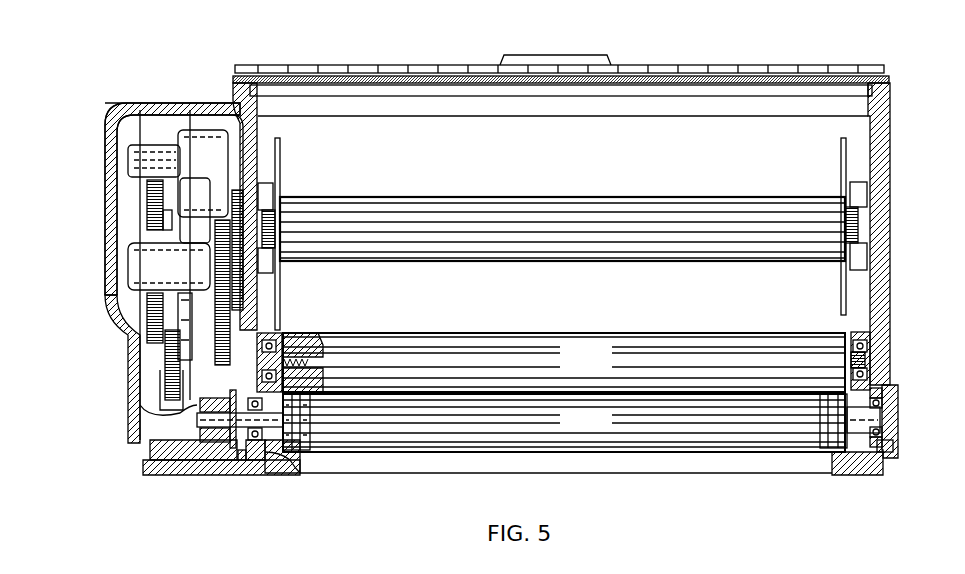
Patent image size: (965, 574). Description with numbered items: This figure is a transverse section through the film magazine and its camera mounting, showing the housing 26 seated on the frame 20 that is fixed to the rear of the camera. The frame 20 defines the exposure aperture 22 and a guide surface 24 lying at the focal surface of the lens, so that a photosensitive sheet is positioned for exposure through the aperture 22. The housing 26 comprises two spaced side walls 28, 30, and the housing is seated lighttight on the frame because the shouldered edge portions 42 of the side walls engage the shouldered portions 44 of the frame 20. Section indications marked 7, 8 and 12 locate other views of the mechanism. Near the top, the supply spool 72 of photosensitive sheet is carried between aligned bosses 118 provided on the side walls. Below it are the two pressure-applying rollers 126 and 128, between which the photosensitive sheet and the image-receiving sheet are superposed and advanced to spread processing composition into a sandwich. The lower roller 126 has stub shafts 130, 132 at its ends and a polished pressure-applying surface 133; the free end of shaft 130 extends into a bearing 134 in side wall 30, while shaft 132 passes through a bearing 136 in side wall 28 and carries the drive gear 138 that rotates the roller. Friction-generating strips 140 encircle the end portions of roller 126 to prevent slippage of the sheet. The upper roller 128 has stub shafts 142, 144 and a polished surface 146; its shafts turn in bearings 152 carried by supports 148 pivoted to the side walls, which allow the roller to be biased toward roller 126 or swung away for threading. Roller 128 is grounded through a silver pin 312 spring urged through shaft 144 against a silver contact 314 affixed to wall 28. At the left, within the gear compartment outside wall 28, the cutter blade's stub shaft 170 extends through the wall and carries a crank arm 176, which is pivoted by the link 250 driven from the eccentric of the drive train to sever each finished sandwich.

The section line 7- 7 is at (122, 100).
The section line 8- 8 is at (218, 100).
The section line 12- 12 is at (103, 125).
The frame 20 is at (289, 480).
The exposure aperture 22 is at (480, 462).
The guide surface 24 is at (556, 452).
The housing 26 is at (888, 156).
The side wall 28 is at (252, 172).
The side wall 30 is at (878, 293).
The shouldered edge portions 42 is at (239, 460).
The shouldered portions 44 is at (248, 460).
The spool 72 is at (484, 196).
The bosses 118 is at (268, 193).
The roller 126 is at (640, 450).
The roller 128 is at (613, 332).
The stub shaft 130 is at (880, 415).
The stub shaft 132 is at (272, 418).
The pressure-applying surface 133 is at (602, 426).
The bearing 134 is at (885, 395).
The bearing 136 is at (300, 458).
The drive gear 138 is at (202, 432).
The friction-generating strips 140 is at (303, 435).
The stub shaft 142 is at (863, 358).
The stub shaft 144 is at (323, 377).
The pressure-applying surface 146 is at (602, 369).
The supports 148 is at (274, 335).
The bearings 152 is at (272, 342).
The stub shaft 170 is at (138, 412).
The crank arm 176 is at (178, 406).
The link 250 is at (168, 375).
The silver pin 312 is at (320, 335).
The silver contact 314 is at (258, 333).